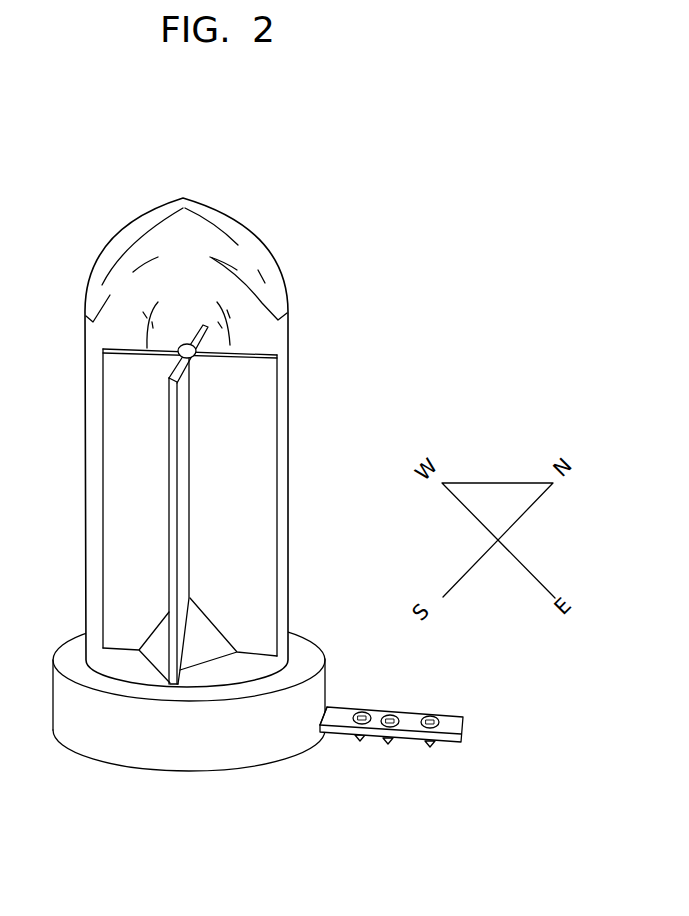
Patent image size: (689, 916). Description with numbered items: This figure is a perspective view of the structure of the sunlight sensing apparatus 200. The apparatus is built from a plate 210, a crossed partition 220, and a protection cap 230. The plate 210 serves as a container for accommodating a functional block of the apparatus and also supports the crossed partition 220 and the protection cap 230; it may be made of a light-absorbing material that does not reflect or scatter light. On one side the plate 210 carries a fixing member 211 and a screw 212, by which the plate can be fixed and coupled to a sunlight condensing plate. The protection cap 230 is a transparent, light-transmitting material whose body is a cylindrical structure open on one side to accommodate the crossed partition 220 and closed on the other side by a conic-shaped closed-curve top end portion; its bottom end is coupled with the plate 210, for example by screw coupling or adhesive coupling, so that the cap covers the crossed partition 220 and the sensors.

The sunlight sensing apparatus 200 is at (243, 487).
The plate 210 is at (222, 740).
The fixing member 211 is at (450, 720).
The screw 212 is at (360, 744).
The crossed partition 220 is at (172, 480).
The protection cap 230 is at (288, 405).